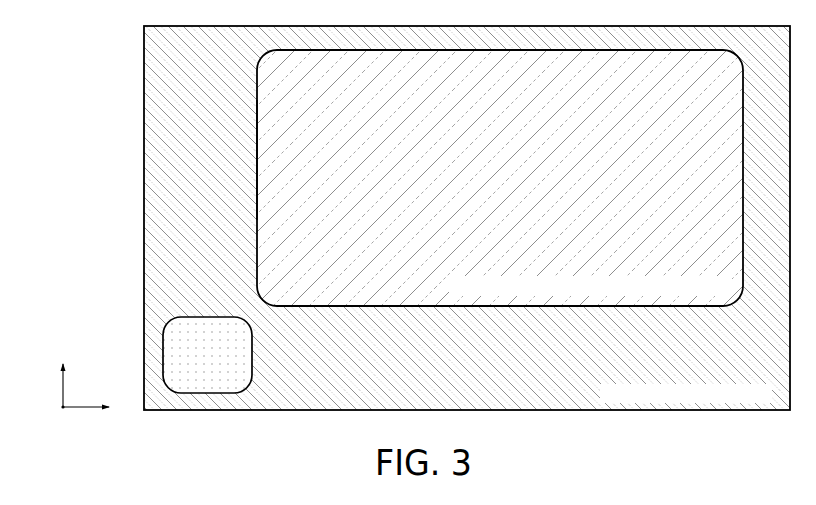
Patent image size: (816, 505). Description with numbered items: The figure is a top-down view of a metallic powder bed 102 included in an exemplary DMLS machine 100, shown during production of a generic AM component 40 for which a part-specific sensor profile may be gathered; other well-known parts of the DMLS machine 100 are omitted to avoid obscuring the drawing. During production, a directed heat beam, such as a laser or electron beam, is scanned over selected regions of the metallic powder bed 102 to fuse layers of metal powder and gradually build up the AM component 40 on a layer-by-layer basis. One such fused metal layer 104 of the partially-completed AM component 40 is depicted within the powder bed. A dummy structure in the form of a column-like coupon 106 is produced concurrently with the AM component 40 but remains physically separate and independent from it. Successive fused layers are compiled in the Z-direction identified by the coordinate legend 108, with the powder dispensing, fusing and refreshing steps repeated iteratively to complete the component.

The DMLS machine 100 is at (129, 95).
The metallic powder bed 102 is at (783, 58).
The fused metal layer 104 is at (724, 88).
The AM component 40 is at (254, 158).
The coupon 106 is at (205, 316).
The coordinate legend 108 is at (62, 388).